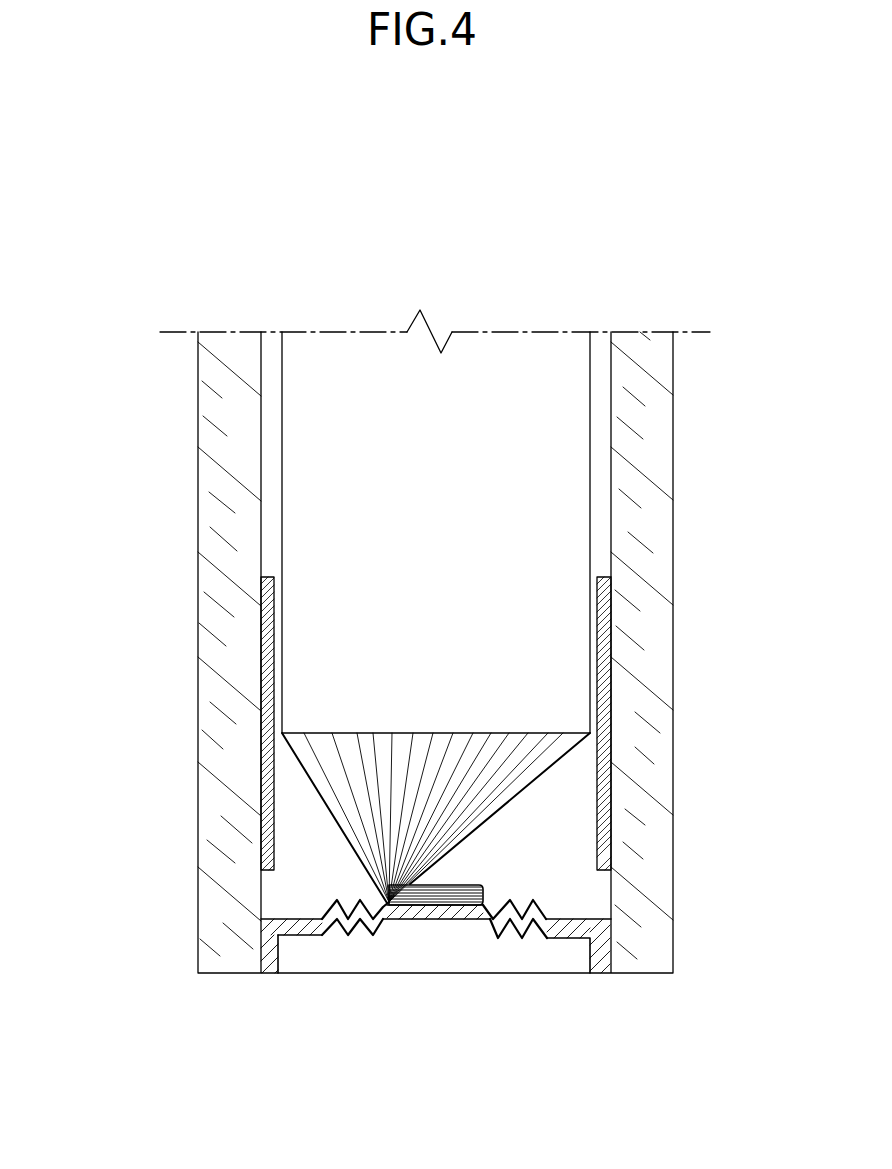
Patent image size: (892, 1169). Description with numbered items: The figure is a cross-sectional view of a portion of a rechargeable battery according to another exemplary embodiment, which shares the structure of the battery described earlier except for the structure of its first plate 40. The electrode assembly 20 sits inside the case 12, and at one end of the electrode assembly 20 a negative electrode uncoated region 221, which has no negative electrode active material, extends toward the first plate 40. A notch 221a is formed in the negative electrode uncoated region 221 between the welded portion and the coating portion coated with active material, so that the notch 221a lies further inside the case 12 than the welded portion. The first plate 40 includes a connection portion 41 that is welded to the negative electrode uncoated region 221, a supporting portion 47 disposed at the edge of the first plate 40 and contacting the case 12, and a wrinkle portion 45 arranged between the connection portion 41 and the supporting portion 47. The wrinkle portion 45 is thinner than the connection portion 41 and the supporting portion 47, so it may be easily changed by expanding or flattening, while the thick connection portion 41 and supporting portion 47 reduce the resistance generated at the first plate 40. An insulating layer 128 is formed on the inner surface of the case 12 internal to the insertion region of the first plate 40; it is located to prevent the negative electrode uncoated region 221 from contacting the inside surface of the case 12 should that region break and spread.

The case 12 is at (640, 623).
The electrode assembly 20 is at (328, 477).
The insulating layer 128 is at (263, 717).
The negative electrode uncoated region 221 is at (483, 792).
The notch 221a is at (413, 883).
The first plate 40 is at (441, 996).
The connection portion 41 is at (443, 920).
The wrinkle portion 45 is at (508, 927).
The supporting portion 47 is at (300, 938).